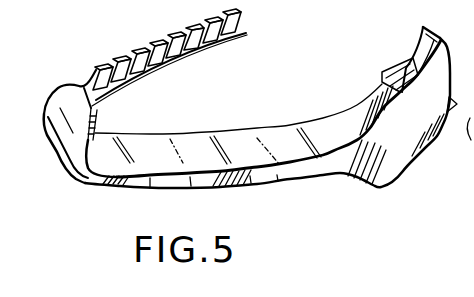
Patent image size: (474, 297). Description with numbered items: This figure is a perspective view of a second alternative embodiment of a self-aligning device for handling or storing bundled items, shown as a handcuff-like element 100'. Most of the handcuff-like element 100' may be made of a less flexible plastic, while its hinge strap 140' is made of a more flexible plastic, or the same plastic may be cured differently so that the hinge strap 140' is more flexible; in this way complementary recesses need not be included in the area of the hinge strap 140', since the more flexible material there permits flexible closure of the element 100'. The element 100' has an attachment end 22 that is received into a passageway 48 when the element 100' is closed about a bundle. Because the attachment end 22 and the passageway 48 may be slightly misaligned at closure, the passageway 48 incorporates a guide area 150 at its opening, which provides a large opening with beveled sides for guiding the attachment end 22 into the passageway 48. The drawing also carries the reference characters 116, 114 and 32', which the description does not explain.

The handcuff-like element 100' is at (247, 135).
The attachment end 22 is at (254, 8).
The top surface of band 116 is at (332, 117).
The hinge strap 140' is at (211, 103).
The lower face 114 is at (152, 178).
The guide area 150 is at (421, 50).
The passageway 48 is at (412, 70).
The tab 32' is at (454, 162).